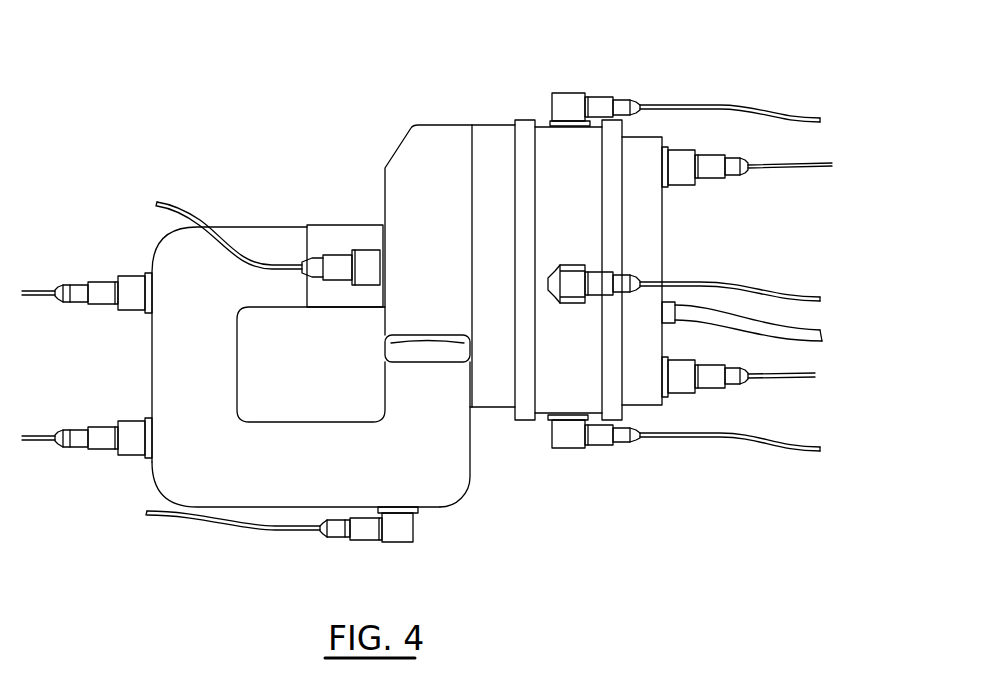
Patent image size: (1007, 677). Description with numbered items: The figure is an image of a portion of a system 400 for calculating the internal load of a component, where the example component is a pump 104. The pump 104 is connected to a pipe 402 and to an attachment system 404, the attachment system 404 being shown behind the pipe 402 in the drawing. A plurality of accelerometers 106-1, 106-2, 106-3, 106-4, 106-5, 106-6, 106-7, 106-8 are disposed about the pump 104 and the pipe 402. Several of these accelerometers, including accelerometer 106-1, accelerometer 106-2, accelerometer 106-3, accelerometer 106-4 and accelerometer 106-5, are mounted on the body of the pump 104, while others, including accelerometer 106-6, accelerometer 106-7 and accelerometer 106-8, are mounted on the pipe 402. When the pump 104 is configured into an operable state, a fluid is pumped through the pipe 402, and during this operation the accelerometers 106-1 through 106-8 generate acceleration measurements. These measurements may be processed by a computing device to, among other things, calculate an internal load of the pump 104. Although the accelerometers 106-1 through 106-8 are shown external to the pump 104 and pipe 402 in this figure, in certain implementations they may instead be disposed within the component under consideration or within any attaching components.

The system 400 is at (253, 80).
The pipe 402 is at (127, 332).
The attachment system 404 is at (371, 160).
The pump 104 is at (475, 100).
The accelerometer 106-1 is at (570, 100).
The accelerometer 106-2 is at (680, 172).
The accelerometer 106-3 is at (568, 285).
The accelerometer 106-4 is at (680, 386).
The accelerometer 106-5 is at (568, 440).
The accelerometer 106-6 is at (408, 530).
The accelerometer 106-7 is at (128, 432).
The accelerometer 106-8 is at (128, 290).